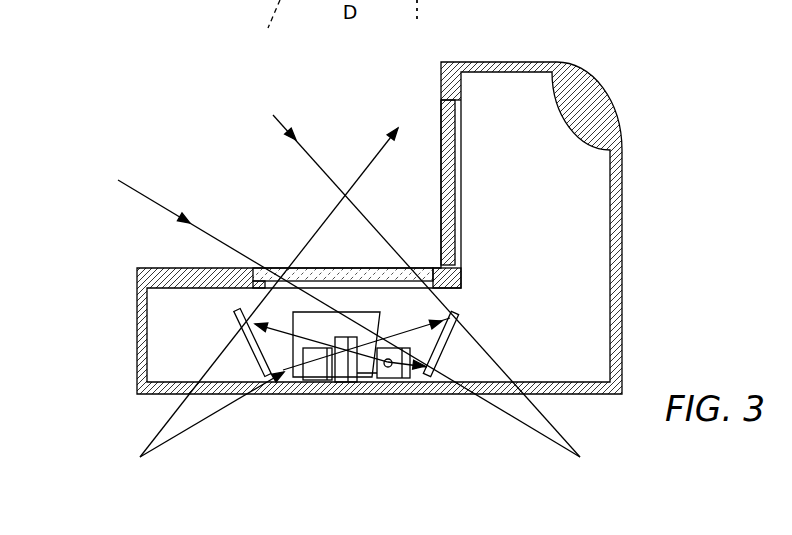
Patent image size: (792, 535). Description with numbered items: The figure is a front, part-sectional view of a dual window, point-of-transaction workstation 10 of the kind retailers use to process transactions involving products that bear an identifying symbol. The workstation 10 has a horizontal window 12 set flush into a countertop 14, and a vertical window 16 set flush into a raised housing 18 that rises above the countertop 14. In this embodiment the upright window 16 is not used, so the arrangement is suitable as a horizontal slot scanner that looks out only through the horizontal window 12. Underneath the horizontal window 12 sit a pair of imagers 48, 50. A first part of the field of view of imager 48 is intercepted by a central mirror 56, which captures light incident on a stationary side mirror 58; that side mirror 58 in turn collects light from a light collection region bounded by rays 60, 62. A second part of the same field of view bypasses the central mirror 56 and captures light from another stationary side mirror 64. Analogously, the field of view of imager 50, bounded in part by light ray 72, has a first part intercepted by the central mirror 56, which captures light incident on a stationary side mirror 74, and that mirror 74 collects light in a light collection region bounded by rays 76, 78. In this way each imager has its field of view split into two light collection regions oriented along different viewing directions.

The point-of-transaction workstation 10 is at (133, 98).
The horizontal window 12 is at (357, 270).
The countertop 14 is at (153, 268).
The vertical window 16 is at (441, 183).
The raised housing 18 is at (608, 90).
The imager 48 is at (317, 380).
The imager 50 is at (397, 376).
The central mirror 56 is at (343, 380).
The stationary side mirror 58 is at (237, 317).
The light ray 60 is at (383, 150).
The light ray 62 is at (378, 300).
The stationary side mirror 64 is at (381, 320).
The light ray 72 is at (430, 0).
The stationary side mirror 74 is at (458, 320).
The light ray 76 is at (303, 148).
The light ray 78 is at (158, 203).